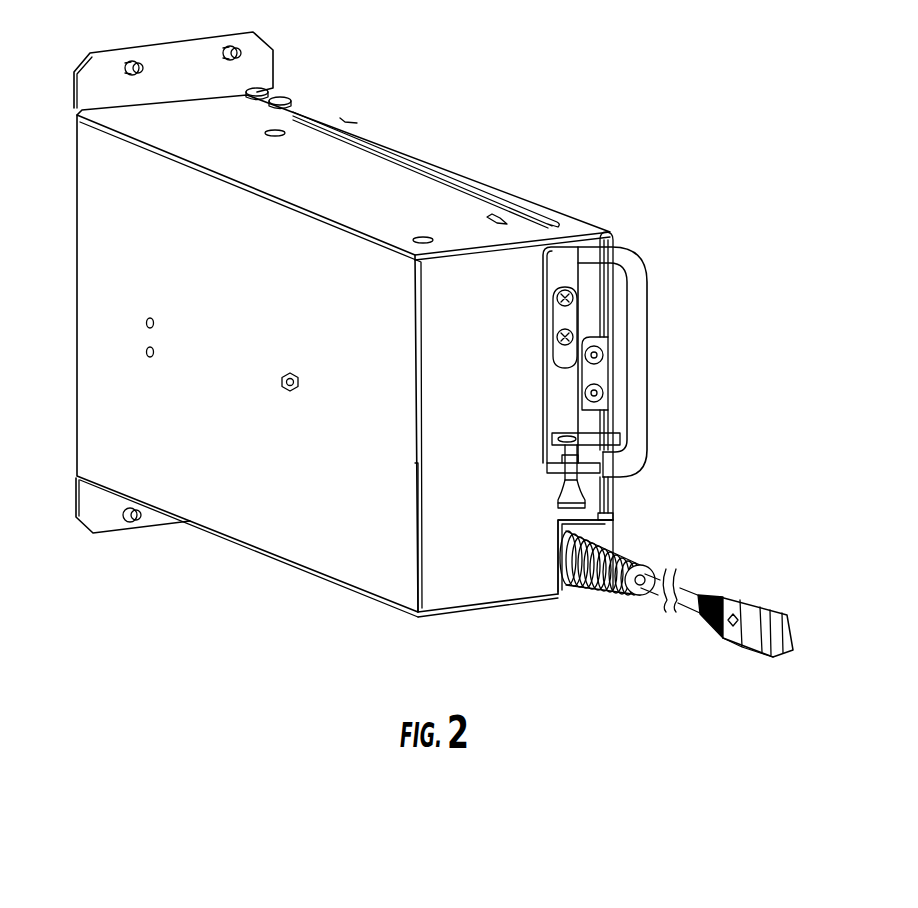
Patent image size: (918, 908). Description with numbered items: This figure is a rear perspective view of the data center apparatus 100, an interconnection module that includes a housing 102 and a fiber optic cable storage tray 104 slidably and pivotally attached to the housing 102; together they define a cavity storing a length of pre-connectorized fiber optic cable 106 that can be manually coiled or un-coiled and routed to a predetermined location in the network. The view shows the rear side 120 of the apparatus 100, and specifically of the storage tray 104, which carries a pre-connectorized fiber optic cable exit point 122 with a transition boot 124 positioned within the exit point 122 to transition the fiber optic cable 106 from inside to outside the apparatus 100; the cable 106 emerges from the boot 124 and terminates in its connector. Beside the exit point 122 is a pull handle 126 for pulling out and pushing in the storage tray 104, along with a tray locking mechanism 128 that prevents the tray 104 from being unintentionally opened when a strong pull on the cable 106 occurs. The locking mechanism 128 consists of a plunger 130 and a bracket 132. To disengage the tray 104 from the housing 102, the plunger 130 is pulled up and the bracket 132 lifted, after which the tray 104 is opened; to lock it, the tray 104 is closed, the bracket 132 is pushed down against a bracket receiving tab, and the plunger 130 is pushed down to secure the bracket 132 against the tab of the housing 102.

The data center apparatus 100 is at (466, 64).
The housing 102 is at (320, 173).
The fiber optic cable storage tray 104 is at (450, 538).
The pre-connectorized fiber optic cable 106 is at (687, 597).
The rear side 120 is at (627, 236).
The pre-connectorized fiber optic cable exit point 122 is at (597, 593).
The transition boot 124 is at (630, 556).
The pull handle 126 is at (630, 432).
The tray locking mechanism 128 is at (590, 512).
The plunger 130 is at (573, 493).
The bracket 132 is at (550, 470).